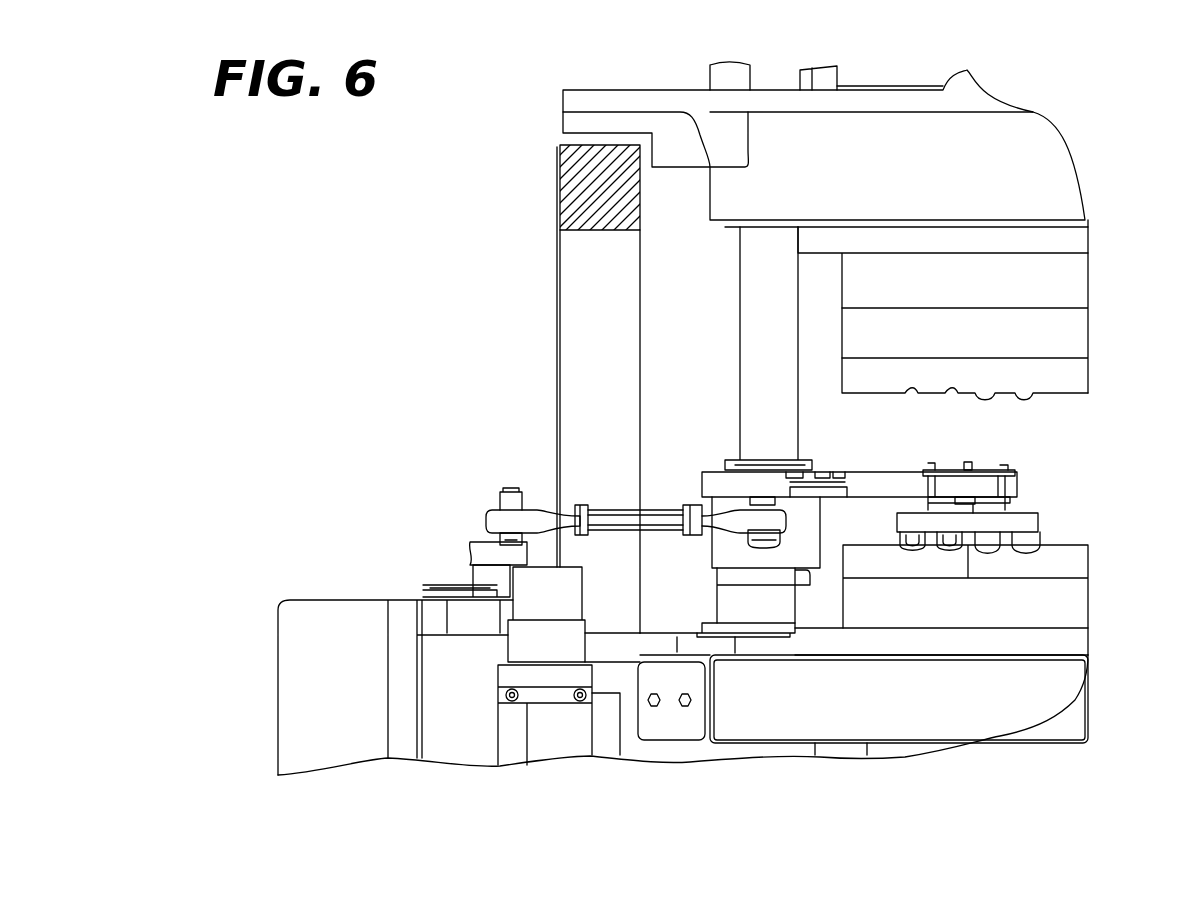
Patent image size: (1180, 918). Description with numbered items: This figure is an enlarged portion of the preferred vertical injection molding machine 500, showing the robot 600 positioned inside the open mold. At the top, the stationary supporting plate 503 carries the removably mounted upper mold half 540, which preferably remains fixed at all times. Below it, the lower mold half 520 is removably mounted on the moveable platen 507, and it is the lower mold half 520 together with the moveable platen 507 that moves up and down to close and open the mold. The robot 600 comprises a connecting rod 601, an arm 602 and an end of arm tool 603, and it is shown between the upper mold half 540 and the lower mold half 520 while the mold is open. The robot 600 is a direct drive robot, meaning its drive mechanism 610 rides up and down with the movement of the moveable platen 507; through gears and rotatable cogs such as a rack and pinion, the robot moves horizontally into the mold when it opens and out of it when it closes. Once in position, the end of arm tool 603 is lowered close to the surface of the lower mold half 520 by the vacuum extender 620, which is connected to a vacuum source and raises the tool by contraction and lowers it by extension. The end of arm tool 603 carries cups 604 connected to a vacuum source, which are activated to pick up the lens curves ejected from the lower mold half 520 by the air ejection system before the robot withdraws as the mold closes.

The vertical injection molding machine 500 is at (484, 238).
The supporting plate 503 is at (870, 153).
The upper mold half 540 is at (1097, 227).
The robot 600 is at (697, 458).
The connecting rod 601 is at (620, 513).
The arm 602 is at (878, 485).
The vacuum extender 620 is at (1022, 508).
The end of arm tool 603 is at (1030, 520).
The cups 604 is at (1042, 540).
The lower mold half 520 is at (1097, 545).
The moveable platen 507 is at (1025, 700).
The drive mechanism 610 is at (590, 805).